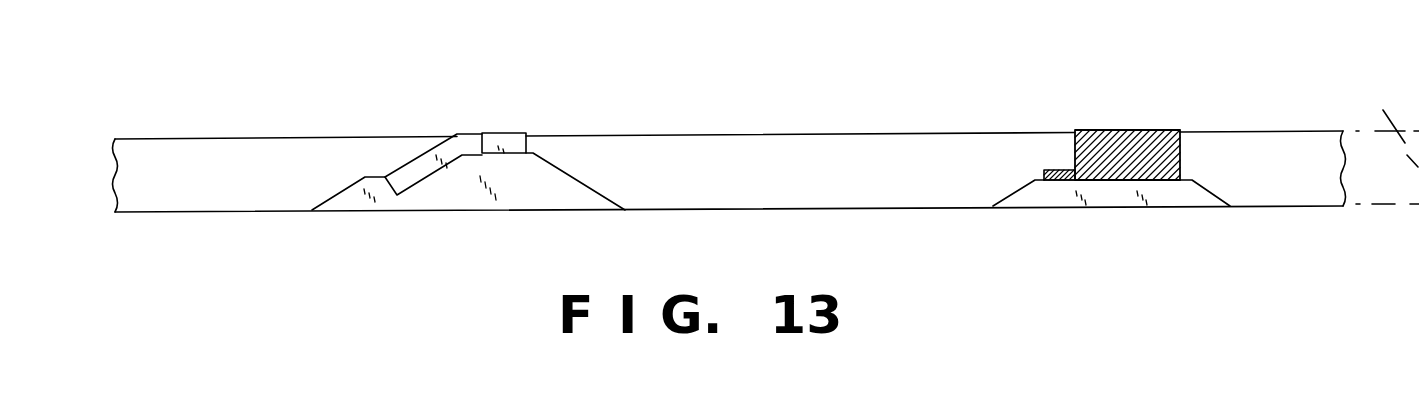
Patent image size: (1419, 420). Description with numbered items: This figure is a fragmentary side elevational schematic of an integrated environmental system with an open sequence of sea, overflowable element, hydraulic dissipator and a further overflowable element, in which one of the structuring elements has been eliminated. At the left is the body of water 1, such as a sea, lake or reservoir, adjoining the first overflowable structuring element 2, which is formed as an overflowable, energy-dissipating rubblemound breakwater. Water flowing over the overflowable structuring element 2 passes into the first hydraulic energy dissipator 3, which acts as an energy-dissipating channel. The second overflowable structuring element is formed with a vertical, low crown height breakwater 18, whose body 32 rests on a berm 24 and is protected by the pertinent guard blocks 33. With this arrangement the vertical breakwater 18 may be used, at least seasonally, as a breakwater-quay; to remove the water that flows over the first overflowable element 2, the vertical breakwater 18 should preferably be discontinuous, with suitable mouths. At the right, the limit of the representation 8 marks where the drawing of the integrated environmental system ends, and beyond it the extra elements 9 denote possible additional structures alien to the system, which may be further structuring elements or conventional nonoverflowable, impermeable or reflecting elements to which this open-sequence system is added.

The body of water 1 is at (290, 139).
The overflowable structuring element 2 is at (502, 133).
The first hydraulic energy dissipator 3 is at (766, 136).
The limit of the representation 8 is at (1343, 122).
The extra elements 9 is at (1387, 138).
The vertical low crown height breakwater 18 is at (1143, 130).
The berm 24 is at (1158, 195).
The body 32 is at (1118, 165).
The guard blocks 33 is at (1052, 180).